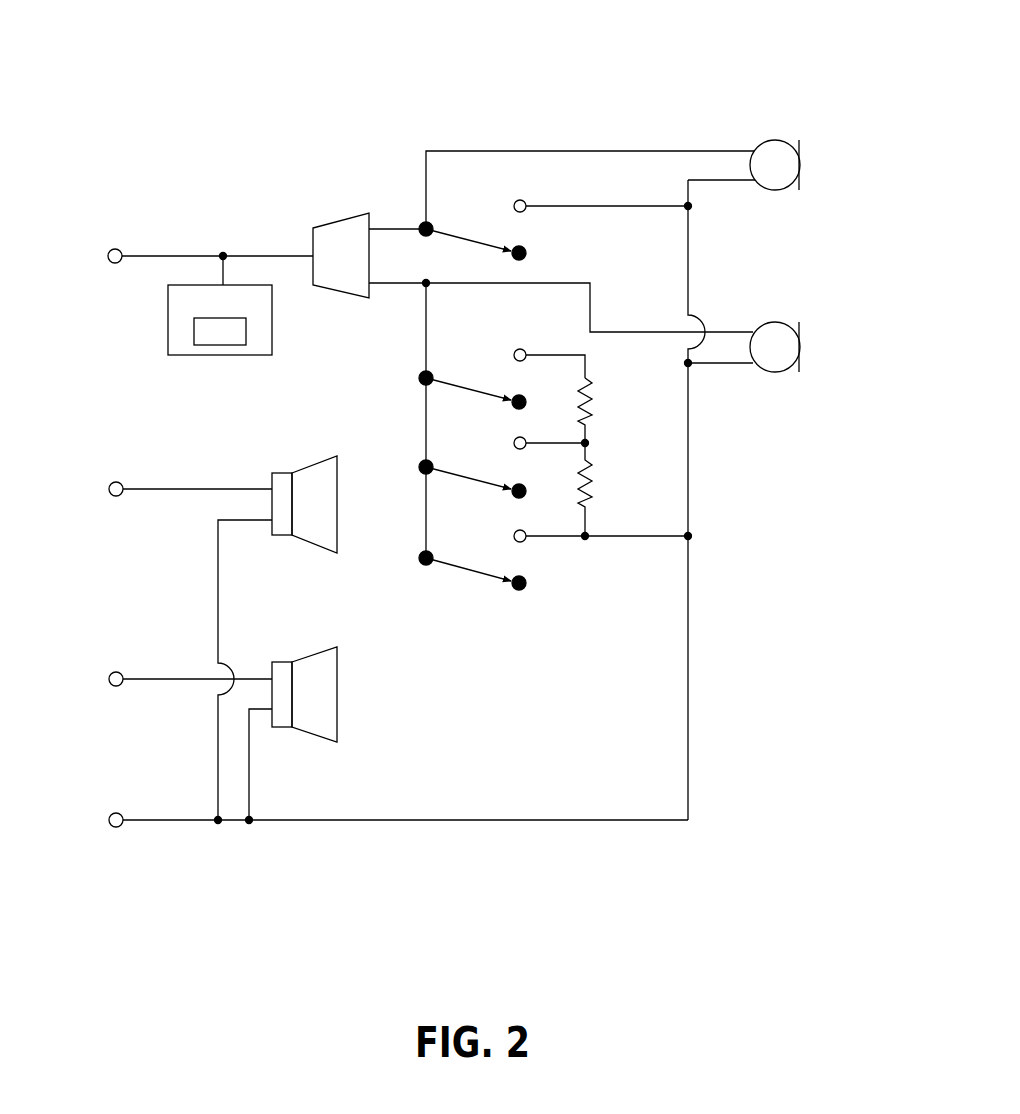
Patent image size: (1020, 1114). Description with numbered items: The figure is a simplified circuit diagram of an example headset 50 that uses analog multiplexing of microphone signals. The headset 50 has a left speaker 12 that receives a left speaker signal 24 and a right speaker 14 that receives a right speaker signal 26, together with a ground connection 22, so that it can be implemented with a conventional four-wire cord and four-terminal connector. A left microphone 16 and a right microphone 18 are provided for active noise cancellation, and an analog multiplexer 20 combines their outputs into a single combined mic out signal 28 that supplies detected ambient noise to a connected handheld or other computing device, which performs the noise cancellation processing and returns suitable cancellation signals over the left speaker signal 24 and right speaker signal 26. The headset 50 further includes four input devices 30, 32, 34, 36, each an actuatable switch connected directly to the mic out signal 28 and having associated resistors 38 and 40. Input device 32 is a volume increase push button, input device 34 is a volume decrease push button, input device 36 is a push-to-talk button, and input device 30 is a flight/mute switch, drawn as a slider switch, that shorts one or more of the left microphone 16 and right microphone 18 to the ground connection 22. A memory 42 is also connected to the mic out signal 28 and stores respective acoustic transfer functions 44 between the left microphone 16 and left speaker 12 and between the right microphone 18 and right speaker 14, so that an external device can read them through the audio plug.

The left speaker 12 is at (314, 444).
The right speaker 14 is at (364, 709).
The left microphone 16 is at (776, 387).
The right microphone 18 is at (775, 110).
The analog multiplexer 20 is at (338, 218).
The ground connection 22 is at (178, 818).
The left speaker signal 24 is at (162, 488).
The right speaker signal 26 is at (165, 678).
The mic out signal 28 is at (160, 253).
The input device 30 is at (409, 567).
The input device 32 is at (411, 455).
The input device 34 is at (406, 371).
The input device 36 is at (477, 204).
The resistor 38 is at (606, 398).
The resistor 40 is at (606, 480).
The memory 42 is at (220, 305).
The acoustic transfer functions 44 is at (220, 331).
The headset 50 is at (194, 63).